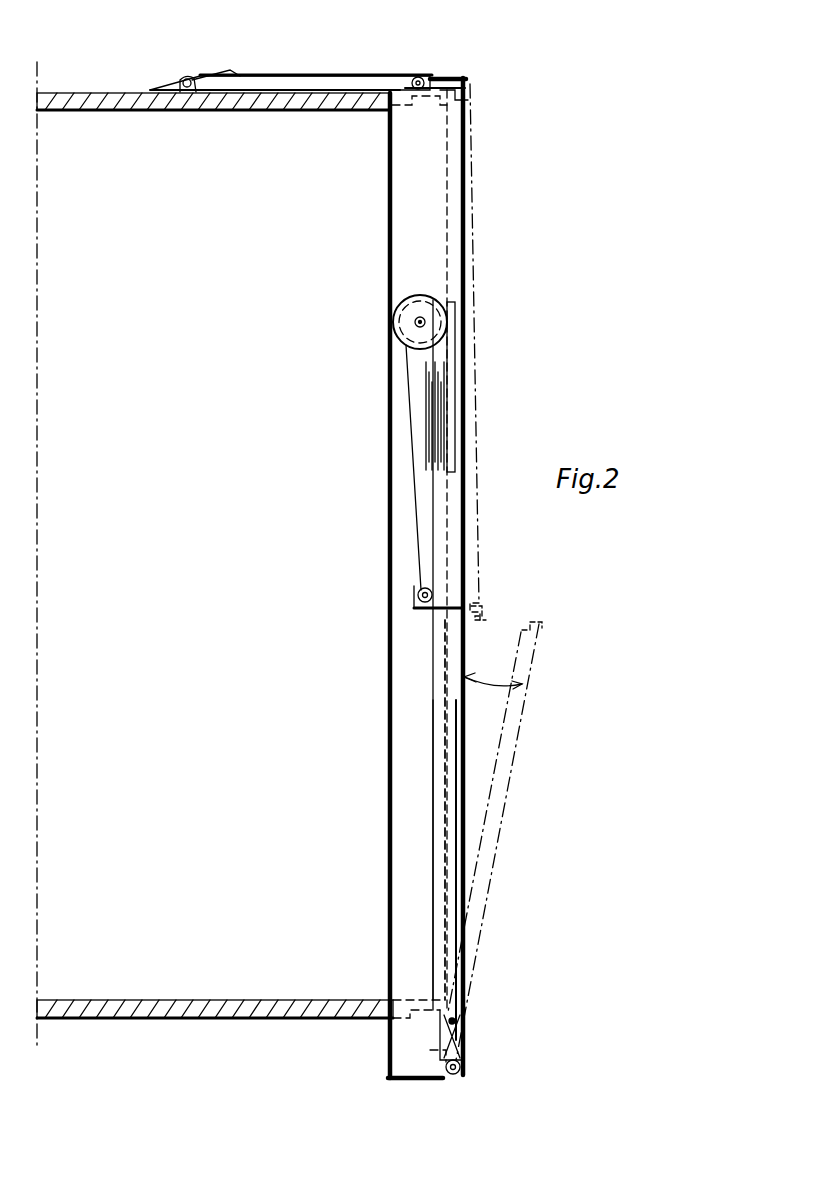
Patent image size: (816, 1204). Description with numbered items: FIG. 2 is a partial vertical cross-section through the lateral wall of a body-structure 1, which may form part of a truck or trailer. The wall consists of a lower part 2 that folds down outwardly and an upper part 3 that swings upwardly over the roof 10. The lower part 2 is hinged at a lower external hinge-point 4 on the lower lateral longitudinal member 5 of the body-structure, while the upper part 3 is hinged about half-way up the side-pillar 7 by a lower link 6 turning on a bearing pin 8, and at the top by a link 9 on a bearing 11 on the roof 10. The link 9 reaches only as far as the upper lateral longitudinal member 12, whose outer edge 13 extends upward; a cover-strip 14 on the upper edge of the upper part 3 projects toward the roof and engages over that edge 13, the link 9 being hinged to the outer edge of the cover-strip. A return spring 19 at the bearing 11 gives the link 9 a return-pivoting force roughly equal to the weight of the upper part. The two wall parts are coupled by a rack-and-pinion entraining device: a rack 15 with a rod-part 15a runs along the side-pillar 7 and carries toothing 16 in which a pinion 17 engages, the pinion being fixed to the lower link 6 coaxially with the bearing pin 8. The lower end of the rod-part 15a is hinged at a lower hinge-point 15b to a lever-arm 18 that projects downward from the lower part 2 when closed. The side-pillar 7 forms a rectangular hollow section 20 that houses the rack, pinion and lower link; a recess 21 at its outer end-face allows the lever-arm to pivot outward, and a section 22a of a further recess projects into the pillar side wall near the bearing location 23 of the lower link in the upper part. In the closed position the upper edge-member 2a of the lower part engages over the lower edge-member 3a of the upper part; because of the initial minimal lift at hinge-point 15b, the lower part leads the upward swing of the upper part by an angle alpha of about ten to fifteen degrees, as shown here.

The body-structure 1 is at (72, 90).
The lower part 2 is at (446, 882).
The upper edge-member 2a is at (540, 618).
The upper part 3 is at (476, 222).
The lower edge-member 3a is at (490, 605).
The lower external hinge-point 4 is at (462, 1016).
The lower lateral longitudinal member 5 is at (432, 1052).
The lower link 6 is at (440, 410).
The side-pillar 7 is at (384, 668).
The bearing pin 8 is at (414, 324).
The link 9 is at (300, 78).
The roof 10 is at (126, 112).
The bearing 11 is at (178, 80).
The upper lateral longitudinal member 12 is at (422, 102).
The outer edge 13 is at (470, 92).
The cover-strip 14 is at (440, 76).
The rack 15 is at (432, 768).
The rod-part 15a is at (438, 822).
The lower hinge-point 15b is at (458, 1072).
The toothing 16 is at (412, 372).
The pinion 17 is at (400, 300).
The lever-arm 18 is at (462, 1040).
The return spring 19 is at (200, 76).
The rectangular hollow section 20 is at (410, 716).
The recess 21 is at (458, 960).
The section of recess 22a is at (414, 606).
The bearing location 23 is at (418, 592).
The angle alpha is at (493, 668).